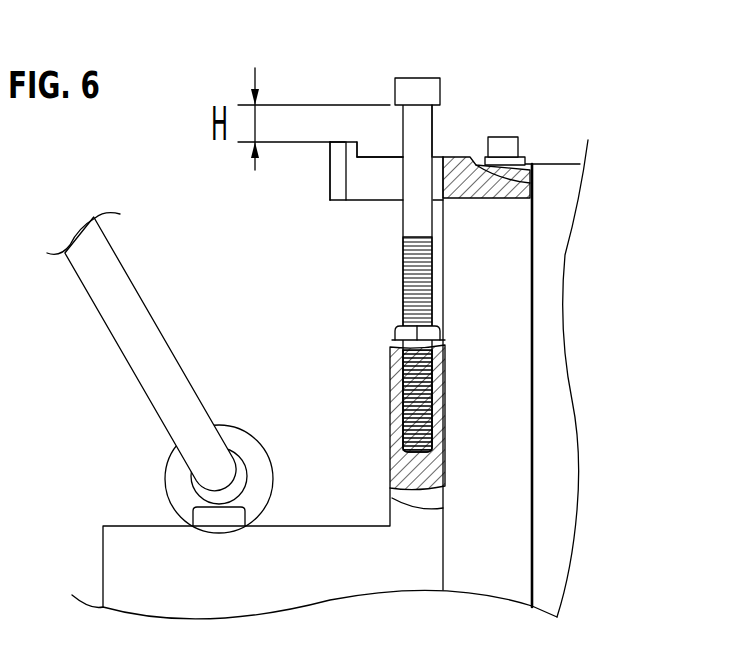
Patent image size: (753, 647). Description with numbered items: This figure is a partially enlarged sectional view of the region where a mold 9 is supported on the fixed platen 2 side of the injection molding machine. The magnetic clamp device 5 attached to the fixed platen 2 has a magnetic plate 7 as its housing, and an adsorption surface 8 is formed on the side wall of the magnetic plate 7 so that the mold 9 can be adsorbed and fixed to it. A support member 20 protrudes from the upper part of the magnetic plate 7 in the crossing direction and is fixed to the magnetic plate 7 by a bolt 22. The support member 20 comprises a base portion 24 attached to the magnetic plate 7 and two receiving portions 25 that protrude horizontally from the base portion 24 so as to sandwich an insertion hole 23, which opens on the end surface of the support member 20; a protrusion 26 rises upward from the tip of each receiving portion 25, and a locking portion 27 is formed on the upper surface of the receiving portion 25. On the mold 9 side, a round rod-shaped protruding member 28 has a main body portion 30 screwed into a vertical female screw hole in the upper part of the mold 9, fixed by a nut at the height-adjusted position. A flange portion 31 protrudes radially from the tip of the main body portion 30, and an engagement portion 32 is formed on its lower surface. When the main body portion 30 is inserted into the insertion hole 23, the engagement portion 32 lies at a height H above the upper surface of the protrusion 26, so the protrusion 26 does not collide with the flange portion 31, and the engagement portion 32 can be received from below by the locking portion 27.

The fixed platen 2 is at (548, 480).
The magnetic clamp device 5 is at (545, 549).
The magnetic plate 7 is at (520, 504).
The adsorption surface 8 is at (390, 497).
The mold 9 is at (388, 462).
The support member 20 is at (537, 183).
The bolt 22 is at (515, 140).
The insertion hole 23 is at (380, 182).
The base portion 24 is at (477, 163).
The receiving portion 25 is at (360, 204).
The protrusion 26 is at (340, 143).
The locking portion 27 is at (387, 152).
The protruding member 28 is at (392, 317).
The main body portion 30 is at (413, 213).
The flange portion 31 is at (422, 87).
The engagement portion 32 is at (437, 110).